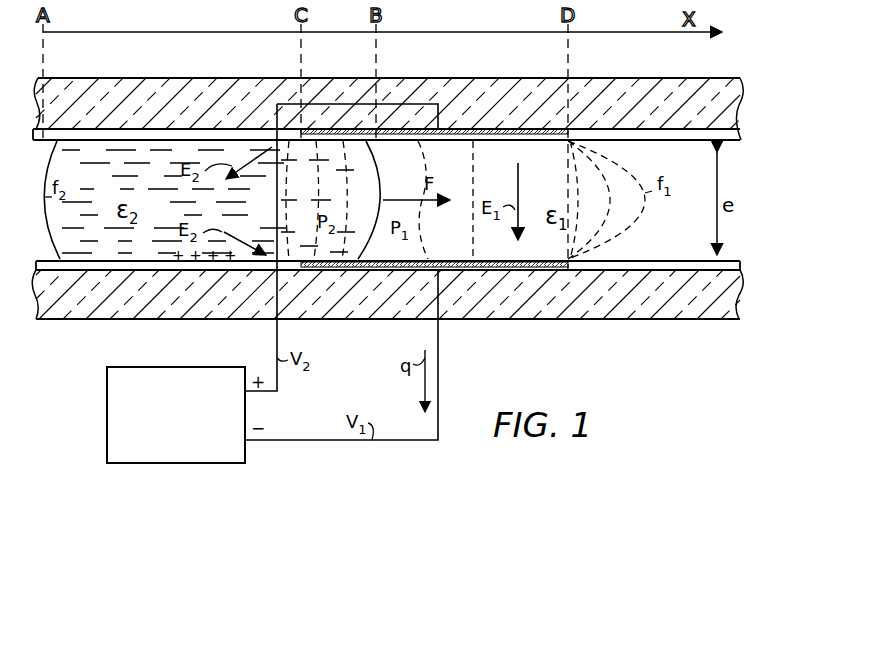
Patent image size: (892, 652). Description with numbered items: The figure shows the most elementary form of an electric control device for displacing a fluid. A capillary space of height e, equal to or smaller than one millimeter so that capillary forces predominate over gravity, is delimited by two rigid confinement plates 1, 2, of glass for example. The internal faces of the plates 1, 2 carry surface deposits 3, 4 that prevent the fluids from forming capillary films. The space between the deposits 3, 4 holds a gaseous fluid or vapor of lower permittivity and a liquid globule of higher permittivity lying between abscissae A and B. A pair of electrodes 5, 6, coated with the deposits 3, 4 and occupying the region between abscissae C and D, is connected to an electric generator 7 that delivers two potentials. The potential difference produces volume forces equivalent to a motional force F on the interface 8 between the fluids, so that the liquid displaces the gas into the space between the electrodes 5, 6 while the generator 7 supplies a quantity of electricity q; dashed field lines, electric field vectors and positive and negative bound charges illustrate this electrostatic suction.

The confinement plate 1 is at (684, 80).
The confinement plate 2 is at (706, 319).
The surface deposit 3 is at (736, 140).
The surface deposit 4 is at (735, 261).
The electrode 5 is at (505, 141).
The electrode 6 is at (507, 262).
The electric generator 7 is at (107, 385).
The interface 8 is at (379, 178).